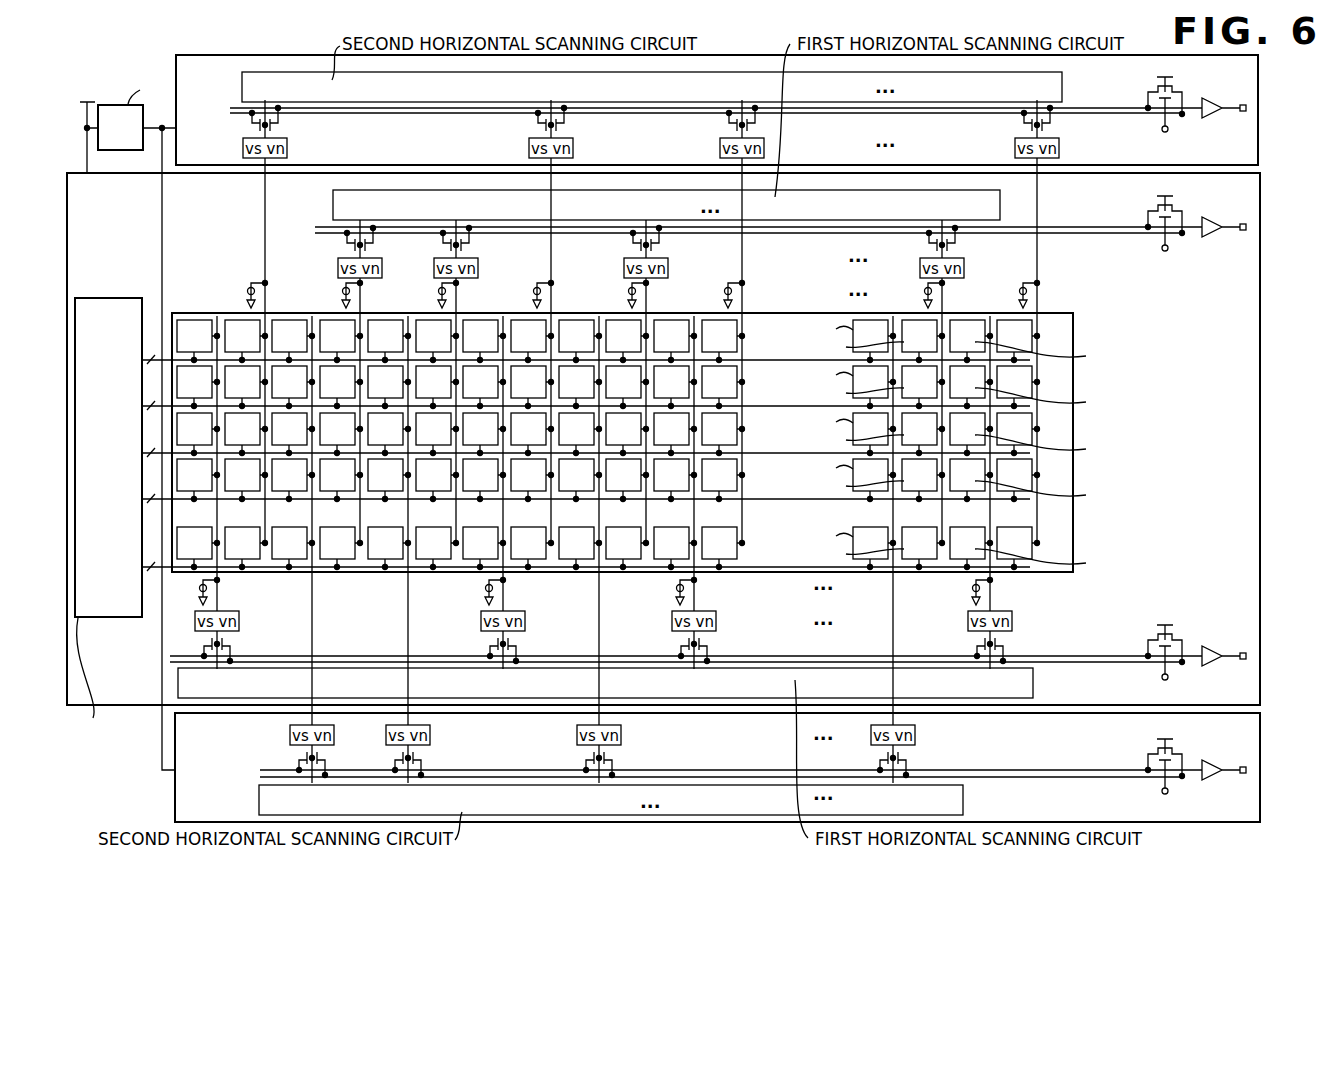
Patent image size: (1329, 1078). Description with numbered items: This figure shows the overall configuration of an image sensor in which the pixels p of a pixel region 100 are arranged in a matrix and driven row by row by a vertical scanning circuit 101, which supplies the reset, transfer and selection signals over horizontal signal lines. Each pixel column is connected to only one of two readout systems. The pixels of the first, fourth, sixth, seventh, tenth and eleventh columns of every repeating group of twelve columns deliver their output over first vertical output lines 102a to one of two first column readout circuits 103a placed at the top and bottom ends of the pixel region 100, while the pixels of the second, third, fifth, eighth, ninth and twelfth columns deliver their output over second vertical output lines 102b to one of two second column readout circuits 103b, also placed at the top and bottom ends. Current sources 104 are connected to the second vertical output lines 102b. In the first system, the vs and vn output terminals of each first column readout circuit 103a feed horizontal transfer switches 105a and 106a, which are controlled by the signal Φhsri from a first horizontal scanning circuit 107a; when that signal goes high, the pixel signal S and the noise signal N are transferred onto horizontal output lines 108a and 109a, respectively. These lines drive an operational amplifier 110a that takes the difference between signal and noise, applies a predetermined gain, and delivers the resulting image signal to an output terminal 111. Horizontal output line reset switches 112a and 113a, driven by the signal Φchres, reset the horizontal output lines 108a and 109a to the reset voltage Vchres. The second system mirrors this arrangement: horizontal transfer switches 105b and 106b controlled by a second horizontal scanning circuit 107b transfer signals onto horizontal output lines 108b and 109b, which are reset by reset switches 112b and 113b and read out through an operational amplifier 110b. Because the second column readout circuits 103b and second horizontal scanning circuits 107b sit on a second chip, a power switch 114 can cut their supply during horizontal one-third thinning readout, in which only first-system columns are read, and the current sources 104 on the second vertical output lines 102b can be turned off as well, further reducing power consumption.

The pixel region 100 is at (190, 314).
The vertical scanning circuit 101 is at (110, 298).
The first vertical output line 102a is at (215, 316).
The second vertical output line 102b is at (265, 212).
The first column readout circuit 103a is at (477, 264).
The second column readout circuit 103b is at (288, 150).
The current source 104 is at (200, 641).
The horizontal transfer switch 105a is at (344, 256).
The horizontal transfer switch (second) 105b is at (252, 122).
The horizontal transfer switch 106a is at (377, 250).
The horizontal transfer switch (second) 106b is at (280, 124).
The first horizontal scanning circuit 107a is at (1002, 204).
The second horizontal scanning circuit 107b is at (1062, 96).
The horizontal output line 108a is at (345, 240).
The horizontal output line (second) 108b is at (415, 114).
The horizontal output line 109a is at (328, 228).
The second horizontal scanning circuit shift register 109b is at (235, 108).
The operational amplifier 110a is at (1216, 234).
The output amplifier (second) 110b is at (1214, 118).
The output terminal 111 is at (1241, 653).
The horizontal output line reset switch 112a is at (1181, 216).
The horizontal output line reset switch (second) 112b is at (1182, 100).
The horizontal output line reset switch 113a is at (1149, 214).
The reset voltage supply Vchres (second) 113b is at (1150, 98).
The power switch 114 is at (136, 140).